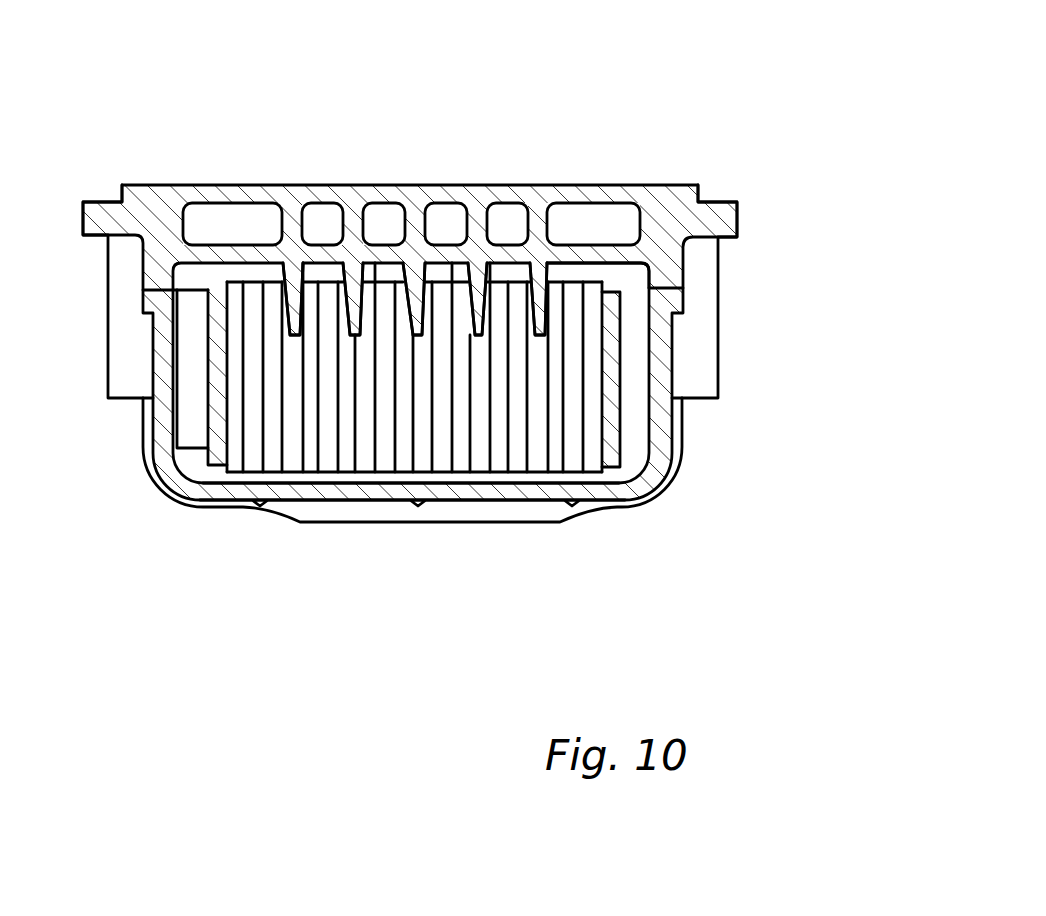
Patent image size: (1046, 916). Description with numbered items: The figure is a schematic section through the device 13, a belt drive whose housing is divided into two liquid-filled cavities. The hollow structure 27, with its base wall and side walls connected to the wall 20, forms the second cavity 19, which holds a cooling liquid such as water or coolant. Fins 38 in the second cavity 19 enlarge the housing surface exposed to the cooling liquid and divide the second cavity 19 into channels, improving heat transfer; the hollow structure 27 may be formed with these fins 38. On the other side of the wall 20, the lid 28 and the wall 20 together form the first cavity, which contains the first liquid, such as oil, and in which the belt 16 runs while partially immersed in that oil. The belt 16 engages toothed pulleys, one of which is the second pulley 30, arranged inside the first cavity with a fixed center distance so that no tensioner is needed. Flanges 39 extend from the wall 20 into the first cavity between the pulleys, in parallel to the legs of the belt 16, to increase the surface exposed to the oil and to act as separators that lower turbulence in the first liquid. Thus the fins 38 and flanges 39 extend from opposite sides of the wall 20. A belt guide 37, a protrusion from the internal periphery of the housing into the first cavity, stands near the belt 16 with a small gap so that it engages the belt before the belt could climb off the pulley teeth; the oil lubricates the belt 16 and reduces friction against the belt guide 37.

The device 13 is at (571, 63).
The second cavity 19 is at (240, 222).
The fins 38 is at (355, 222).
The wall 20 is at (596, 255).
The structure 27 is at (685, 206).
The belt guide 37 is at (184, 441).
The belt 16 is at (213, 460).
The second pulley 30 is at (537, 448).
The flanges 39 is at (357, 336).
The lid 28 is at (470, 493).